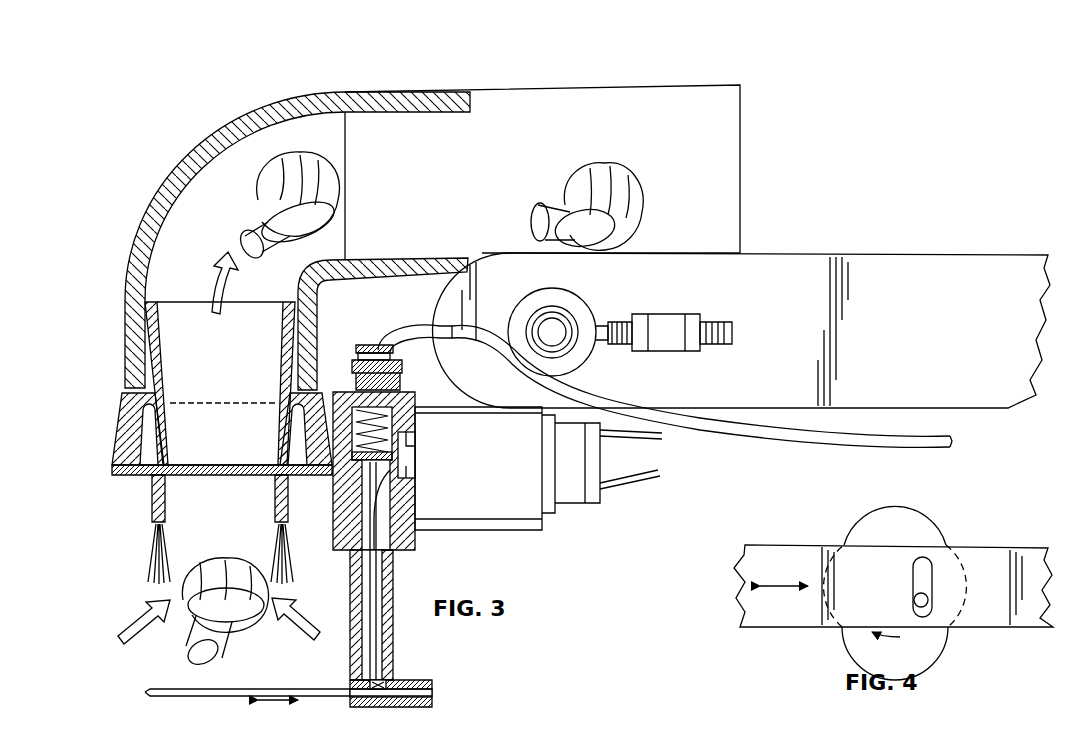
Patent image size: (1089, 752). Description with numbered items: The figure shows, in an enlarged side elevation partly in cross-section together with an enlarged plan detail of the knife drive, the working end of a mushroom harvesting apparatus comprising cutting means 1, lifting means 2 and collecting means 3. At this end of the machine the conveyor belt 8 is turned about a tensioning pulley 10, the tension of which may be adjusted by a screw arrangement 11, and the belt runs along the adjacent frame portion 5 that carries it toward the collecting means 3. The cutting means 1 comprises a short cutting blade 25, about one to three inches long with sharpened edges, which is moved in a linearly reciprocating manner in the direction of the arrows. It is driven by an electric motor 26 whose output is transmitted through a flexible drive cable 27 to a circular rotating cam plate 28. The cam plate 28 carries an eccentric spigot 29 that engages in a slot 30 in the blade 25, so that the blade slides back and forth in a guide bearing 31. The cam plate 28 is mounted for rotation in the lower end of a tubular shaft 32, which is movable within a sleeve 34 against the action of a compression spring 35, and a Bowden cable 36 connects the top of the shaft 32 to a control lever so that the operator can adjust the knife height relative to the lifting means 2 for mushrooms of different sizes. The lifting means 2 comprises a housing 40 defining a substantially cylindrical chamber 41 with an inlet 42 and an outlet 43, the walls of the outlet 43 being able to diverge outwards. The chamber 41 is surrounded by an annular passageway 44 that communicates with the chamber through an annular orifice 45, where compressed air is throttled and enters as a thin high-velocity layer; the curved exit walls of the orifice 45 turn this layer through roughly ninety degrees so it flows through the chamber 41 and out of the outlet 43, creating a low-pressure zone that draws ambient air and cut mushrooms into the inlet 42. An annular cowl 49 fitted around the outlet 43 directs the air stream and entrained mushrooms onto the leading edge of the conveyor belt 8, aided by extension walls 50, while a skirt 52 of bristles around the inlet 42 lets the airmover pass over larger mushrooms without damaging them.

In FIG. 3, the cutting means 1 is at (178, 725).
In FIG. 3, the lifting means 2 is at (96, 514).
In FIG. 3, the collecting means 3 is at (840, 70).
In FIG. 3, the support beam 5 is at (972, 270).
In FIG. 3, the conveyor belt 8 is at (862, 255).
In FIG. 3, the tensioning pulley 10 is at (588, 318).
In FIG. 3, the screw arrangement 11 is at (690, 312).
In FIG. 3, the cutting blade 25 is at (236, 695).
In FIG. 4, the cutting blade 25 is at (770, 618).
In FIG. 3, the electric motor 26 is at (512, 508).
In FIG. 3, the flexible drive cable 27 is at (372, 580).
In FIG. 3, the cam plate 28 is at (386, 681).
In FIG. 4, the cam plate 28 is at (908, 540).
In FIG. 4, the eccentric spigot 29 is at (929, 600).
In FIG. 4, the slot 30 is at (926, 568).
In FIG. 3, the guide bearing 31 is at (423, 683).
In FIG. 3, the tubular shaft 32 is at (393, 645).
In FIG. 3, the sleeve 34 is at (405, 542).
In FIG. 3, the compression spring 35 is at (389, 414).
In FIG. 3, the Bowden cable 36 is at (806, 438).
In FIG. 3, the housing 40 is at (119, 432).
In FIG. 3, the chamber 41 is at (222, 445).
In FIG. 3, the inlet 42 is at (176, 507).
In FIG. 3, the outlet 43 is at (176, 322).
In FIG. 3, the annular passageway 44 is at (143, 453).
In FIG. 3, the annular orifice 45 is at (152, 470).
In FIG. 3, the annular cowl 49 is at (236, 118).
In FIG. 3, the extension walls 50 is at (608, 96).
In FIG. 3, the skirt 52 is at (148, 572).